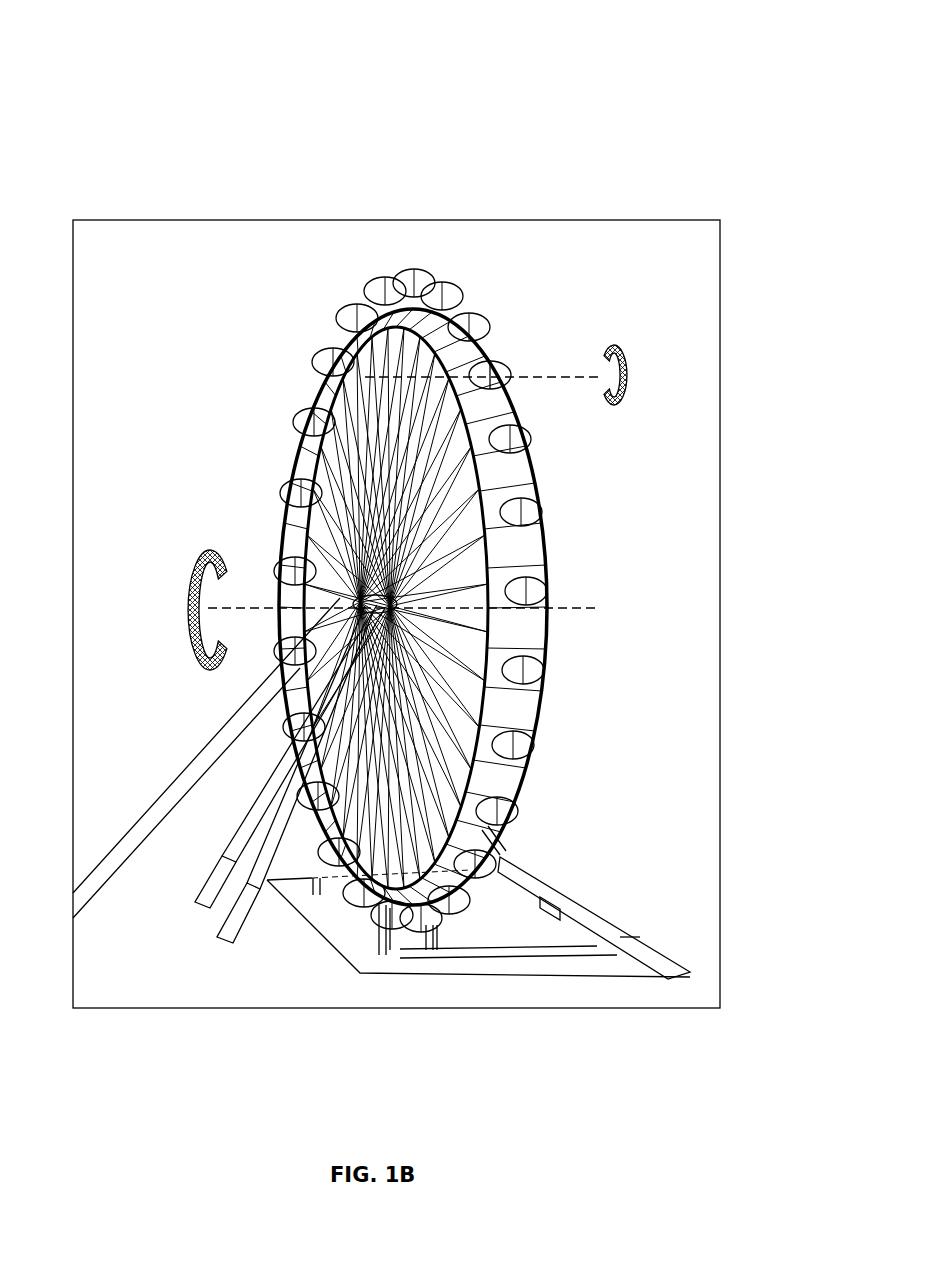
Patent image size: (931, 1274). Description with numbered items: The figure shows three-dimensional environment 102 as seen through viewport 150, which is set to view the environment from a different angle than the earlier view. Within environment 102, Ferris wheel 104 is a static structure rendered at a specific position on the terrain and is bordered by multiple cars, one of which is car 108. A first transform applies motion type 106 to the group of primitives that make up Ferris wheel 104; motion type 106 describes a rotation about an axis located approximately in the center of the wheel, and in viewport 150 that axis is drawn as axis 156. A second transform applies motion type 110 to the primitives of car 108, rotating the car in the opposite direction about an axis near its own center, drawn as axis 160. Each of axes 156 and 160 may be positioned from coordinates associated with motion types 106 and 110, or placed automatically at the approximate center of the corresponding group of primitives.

The viewport 150 is at (717, 160).
The three-dimensional environment 102 is at (103, 505).
The Ferris wheel 104 is at (237, 823).
The motion type 106 is at (190, 648).
The car 108 is at (492, 365).
The motion type 110 is at (620, 405).
The axis 156 is at (572, 612).
The axis 160 is at (553, 380).